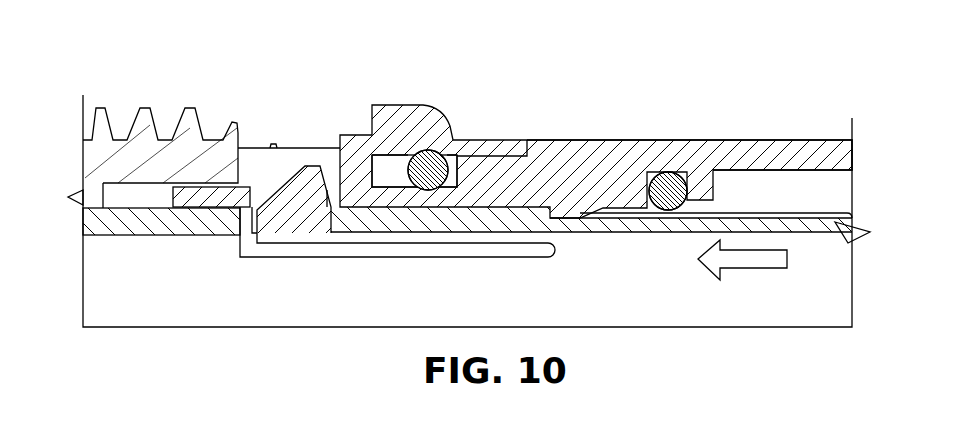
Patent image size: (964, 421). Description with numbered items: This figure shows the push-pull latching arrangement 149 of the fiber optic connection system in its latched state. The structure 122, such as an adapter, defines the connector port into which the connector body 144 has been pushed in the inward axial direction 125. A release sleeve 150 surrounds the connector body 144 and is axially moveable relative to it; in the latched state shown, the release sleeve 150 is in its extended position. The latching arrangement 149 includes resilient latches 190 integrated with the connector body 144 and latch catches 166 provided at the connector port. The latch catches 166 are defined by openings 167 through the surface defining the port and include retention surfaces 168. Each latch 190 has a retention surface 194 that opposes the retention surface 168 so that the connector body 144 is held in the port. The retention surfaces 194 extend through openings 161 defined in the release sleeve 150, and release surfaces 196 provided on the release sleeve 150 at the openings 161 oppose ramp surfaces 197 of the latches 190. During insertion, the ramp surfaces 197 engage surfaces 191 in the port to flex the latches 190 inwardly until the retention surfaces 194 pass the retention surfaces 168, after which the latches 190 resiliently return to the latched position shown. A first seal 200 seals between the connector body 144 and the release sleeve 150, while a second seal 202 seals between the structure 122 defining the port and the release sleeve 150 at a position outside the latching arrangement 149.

The structure 122 is at (432, 110).
The inward axial direction 125 is at (753, 268).
The connector body 144 is at (833, 250).
The latching arrangement 149 is at (417, 90).
The release sleeve 150 is at (613, 140).
The openings 161 is at (238, 178).
The latch catches 166 is at (329, 164).
The openings 167 is at (273, 147).
The retention surfaces 168 is at (334, 135).
The resilient latches 190 is at (367, 228).
The surfaces 191 is at (340, 140).
The retention surfaces 194 is at (300, 183).
The release surfaces 196 is at (233, 205).
The ramp surfaces 197 is at (300, 185).
The first seal 200 is at (672, 172).
The second seal 202 is at (445, 152).